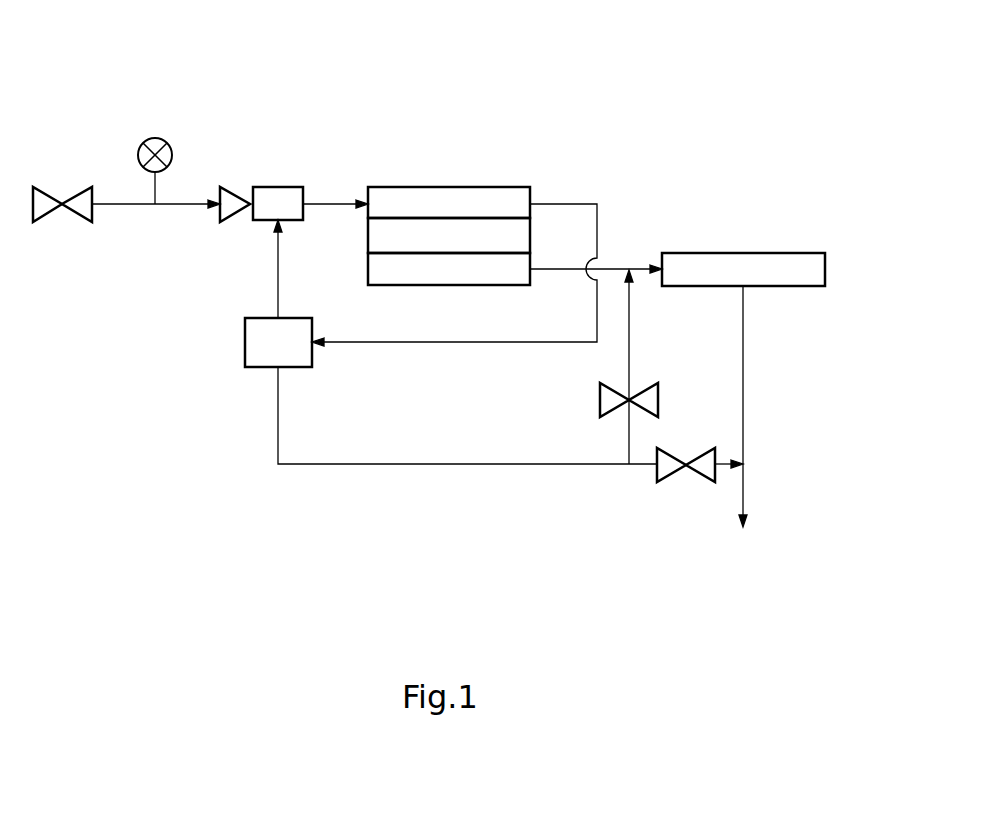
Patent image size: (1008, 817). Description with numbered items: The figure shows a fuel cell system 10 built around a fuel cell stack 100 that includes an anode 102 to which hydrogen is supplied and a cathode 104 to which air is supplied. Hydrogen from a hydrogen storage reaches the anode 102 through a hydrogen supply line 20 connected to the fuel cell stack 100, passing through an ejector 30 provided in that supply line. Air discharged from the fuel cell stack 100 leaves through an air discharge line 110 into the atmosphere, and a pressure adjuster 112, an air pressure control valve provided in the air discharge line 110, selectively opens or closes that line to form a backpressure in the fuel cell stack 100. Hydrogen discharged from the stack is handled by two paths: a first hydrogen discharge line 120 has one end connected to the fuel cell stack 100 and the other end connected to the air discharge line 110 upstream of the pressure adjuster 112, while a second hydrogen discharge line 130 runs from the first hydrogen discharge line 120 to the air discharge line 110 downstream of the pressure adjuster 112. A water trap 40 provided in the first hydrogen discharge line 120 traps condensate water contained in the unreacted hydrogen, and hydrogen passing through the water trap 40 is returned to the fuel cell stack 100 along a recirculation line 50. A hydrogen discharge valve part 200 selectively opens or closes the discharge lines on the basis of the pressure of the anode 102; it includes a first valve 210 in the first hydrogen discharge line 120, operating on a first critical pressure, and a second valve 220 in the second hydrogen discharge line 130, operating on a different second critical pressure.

The fuel cell system 10 is at (131, 30).
The hydrogen supply line 20 is at (187, 207).
The ejector 30 is at (277, 187).
The water trap 40 is at (245, 340).
The recirculation line 50 is at (278, 267).
The fuel cell stack 100 is at (420, 187).
The anode 102 is at (448, 187).
The cathode 104 is at (367, 267).
The air discharge line 110 is at (745, 365).
The pressure adjuster 112 is at (827, 268).
The first hydrogen discharge line 120 is at (630, 333).
The second hydrogen discharge line 130 is at (482, 467).
The hydrogen discharge valve part 200 is at (655, 477).
The first valve 210 is at (615, 413).
The second valve 220 is at (700, 488).